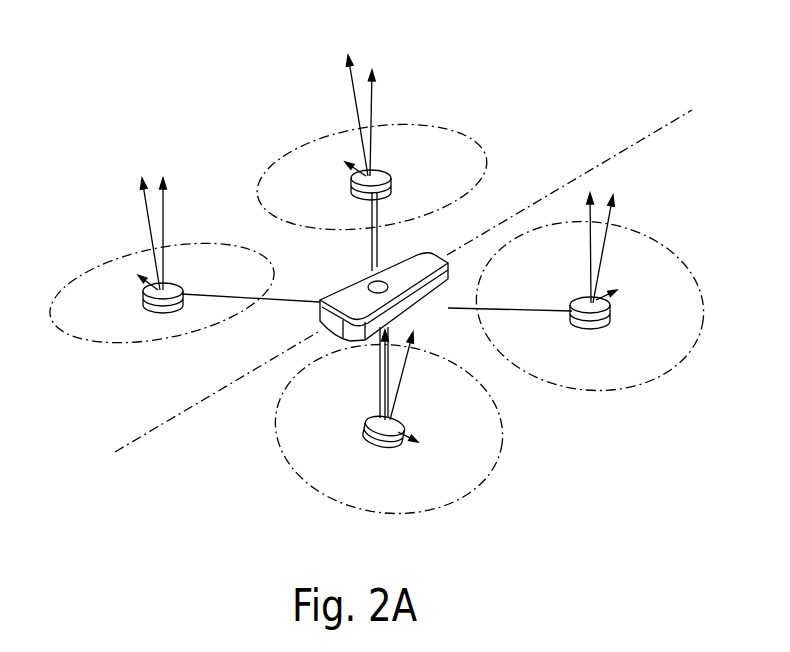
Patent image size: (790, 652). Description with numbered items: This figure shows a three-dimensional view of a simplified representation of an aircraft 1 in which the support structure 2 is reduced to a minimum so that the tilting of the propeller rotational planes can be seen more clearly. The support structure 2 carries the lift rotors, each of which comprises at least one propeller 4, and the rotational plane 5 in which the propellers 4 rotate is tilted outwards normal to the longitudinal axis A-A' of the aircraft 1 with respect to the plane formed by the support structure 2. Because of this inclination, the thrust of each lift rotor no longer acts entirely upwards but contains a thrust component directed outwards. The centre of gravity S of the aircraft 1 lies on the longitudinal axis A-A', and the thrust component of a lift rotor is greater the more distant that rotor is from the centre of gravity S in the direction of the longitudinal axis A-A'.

The aircraft 1 is at (168, 104).
The support structure 2 is at (434, 290).
The propeller 4 is at (358, 192).
The rotational plane 5 is at (450, 128).
The centre of gravity S is at (373, 285).
The longitudinal axis A-A' A is at (415, 287).